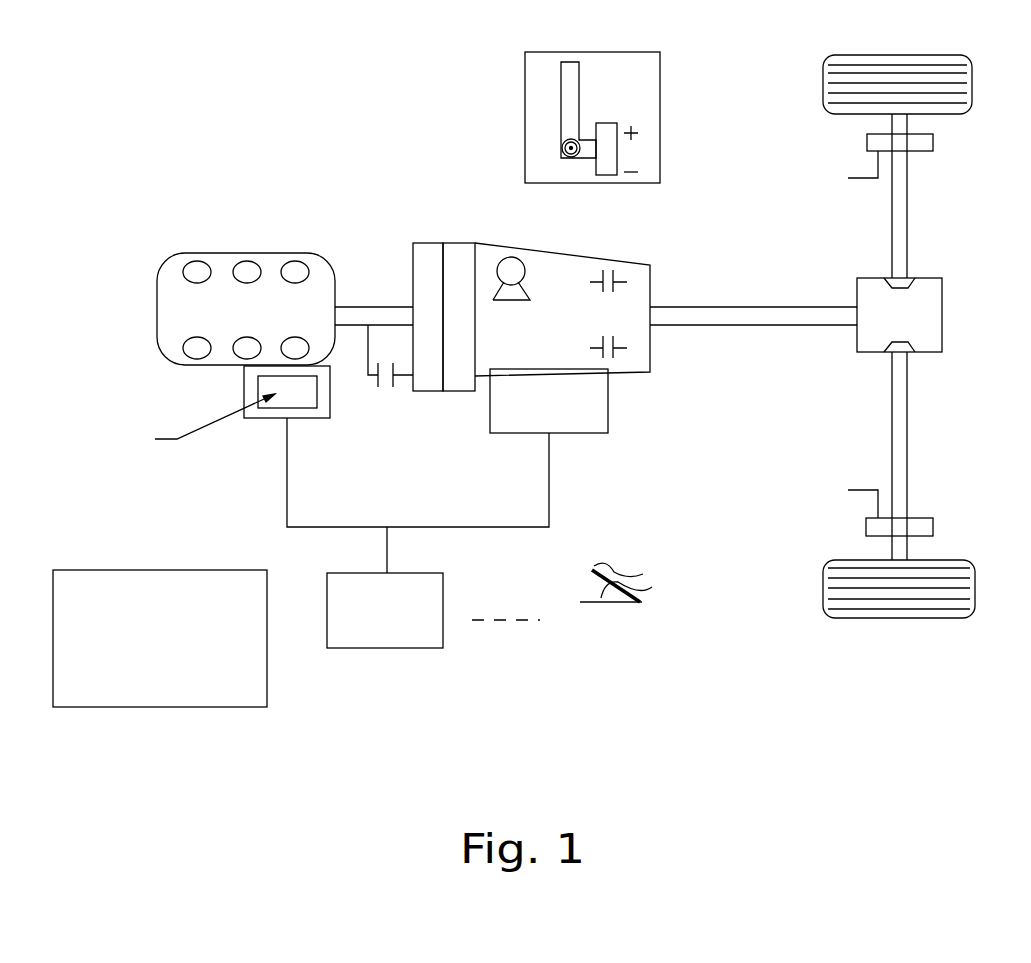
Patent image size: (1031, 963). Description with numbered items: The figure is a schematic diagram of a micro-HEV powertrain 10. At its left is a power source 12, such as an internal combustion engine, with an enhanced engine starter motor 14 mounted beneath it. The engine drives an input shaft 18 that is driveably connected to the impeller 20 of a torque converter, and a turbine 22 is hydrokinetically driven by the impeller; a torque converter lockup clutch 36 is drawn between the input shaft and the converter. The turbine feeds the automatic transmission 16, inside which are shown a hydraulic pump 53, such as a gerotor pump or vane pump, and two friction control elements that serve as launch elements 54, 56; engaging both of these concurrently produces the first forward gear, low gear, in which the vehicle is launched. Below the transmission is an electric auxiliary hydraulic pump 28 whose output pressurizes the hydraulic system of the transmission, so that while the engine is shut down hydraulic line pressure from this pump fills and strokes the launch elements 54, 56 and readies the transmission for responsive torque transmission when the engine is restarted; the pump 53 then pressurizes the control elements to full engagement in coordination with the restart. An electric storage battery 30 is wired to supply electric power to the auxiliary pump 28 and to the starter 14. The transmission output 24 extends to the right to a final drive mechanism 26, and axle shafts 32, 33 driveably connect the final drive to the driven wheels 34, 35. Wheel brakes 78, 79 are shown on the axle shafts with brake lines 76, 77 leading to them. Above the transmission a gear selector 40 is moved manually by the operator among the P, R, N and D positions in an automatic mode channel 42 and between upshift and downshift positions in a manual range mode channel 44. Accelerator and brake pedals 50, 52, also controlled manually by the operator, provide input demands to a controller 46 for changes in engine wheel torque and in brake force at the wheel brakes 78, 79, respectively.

The micro-HEV powertrain 10 is at (263, 183).
The power source 12 is at (178, 262).
The enhanced engine starter motor 14 is at (257, 420).
The automatic transmission 16 is at (562, 253).
The input shaft 18 is at (382, 307).
The impeller 20 is at (430, 243).
The turbine 22 is at (457, 243).
The transmission output 24 is at (730, 305).
The final drive mechanism 26 is at (868, 340).
The electric auxiliary hydraulic pump 28 is at (560, 435).
The electric storage battery 30 is at (418, 533).
The axle shaft 32 is at (908, 192).
The axle shaft 33 is at (907, 472).
The driven wheel 34 is at (822, 103).
The driven wheel 35 is at (938, 620).
The torque converter lockup clutch 36 is at (380, 388).
The gear selector 40 is at (635, 183).
The automatic mode channel 42 is at (572, 75).
The manual range mode channel 44 is at (660, 132).
The controller 46 is at (108, 707).
The accelerator pedal 50 is at (598, 609).
The brake pedal 52 is at (588, 583).
The hydraulic pump 53 is at (513, 256).
The launch element 54 is at (618, 274).
The launch element 56 is at (625, 350).
The brake line 76 is at (866, 182).
The brake line 77 is at (865, 489).
The wheel brake 78 is at (932, 150).
The wheel brake 79 is at (933, 524).